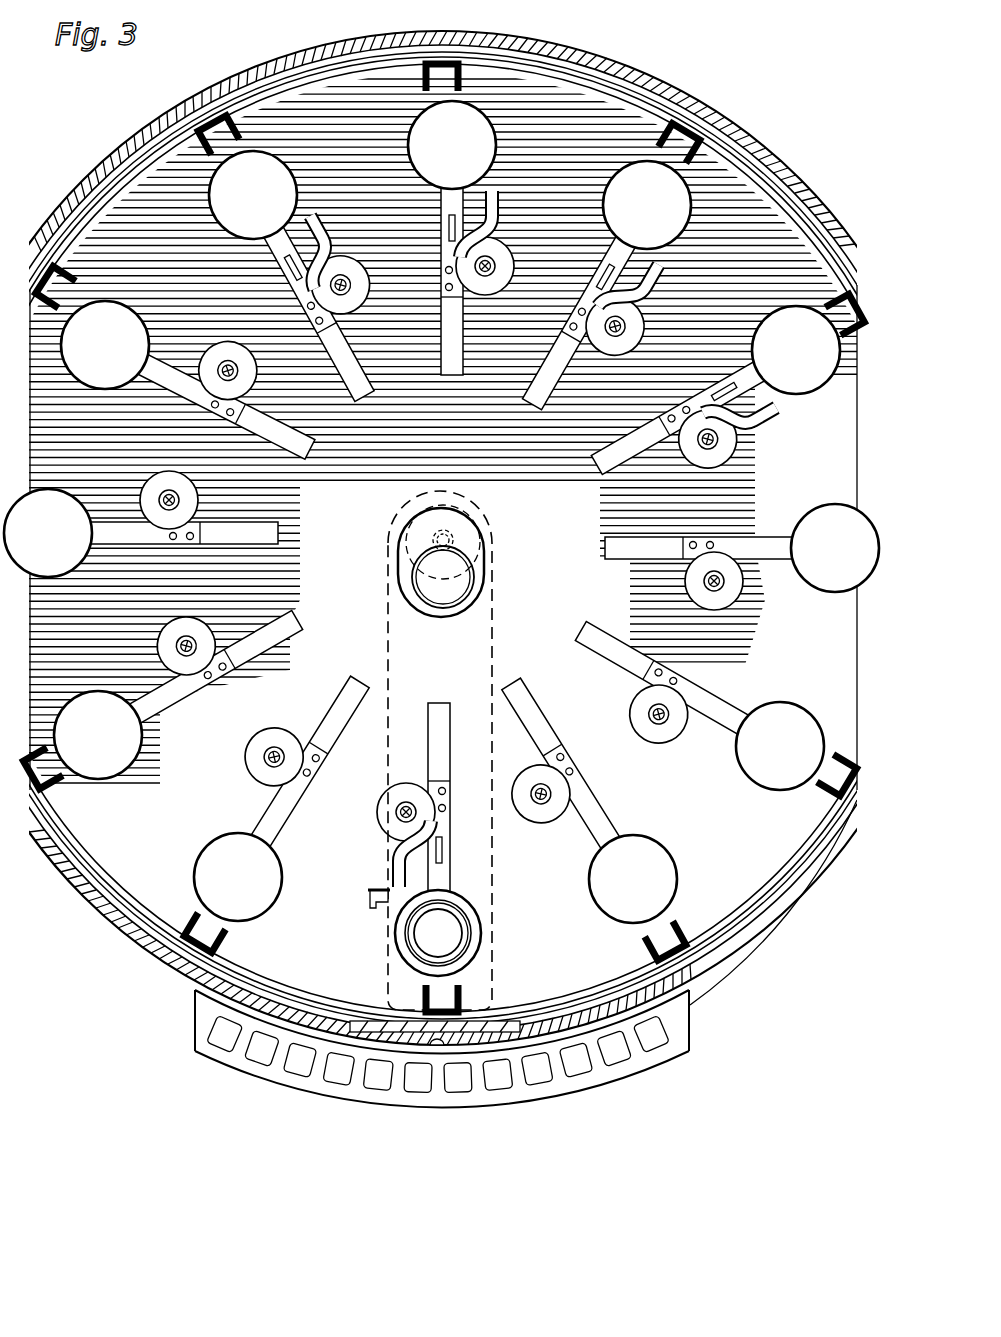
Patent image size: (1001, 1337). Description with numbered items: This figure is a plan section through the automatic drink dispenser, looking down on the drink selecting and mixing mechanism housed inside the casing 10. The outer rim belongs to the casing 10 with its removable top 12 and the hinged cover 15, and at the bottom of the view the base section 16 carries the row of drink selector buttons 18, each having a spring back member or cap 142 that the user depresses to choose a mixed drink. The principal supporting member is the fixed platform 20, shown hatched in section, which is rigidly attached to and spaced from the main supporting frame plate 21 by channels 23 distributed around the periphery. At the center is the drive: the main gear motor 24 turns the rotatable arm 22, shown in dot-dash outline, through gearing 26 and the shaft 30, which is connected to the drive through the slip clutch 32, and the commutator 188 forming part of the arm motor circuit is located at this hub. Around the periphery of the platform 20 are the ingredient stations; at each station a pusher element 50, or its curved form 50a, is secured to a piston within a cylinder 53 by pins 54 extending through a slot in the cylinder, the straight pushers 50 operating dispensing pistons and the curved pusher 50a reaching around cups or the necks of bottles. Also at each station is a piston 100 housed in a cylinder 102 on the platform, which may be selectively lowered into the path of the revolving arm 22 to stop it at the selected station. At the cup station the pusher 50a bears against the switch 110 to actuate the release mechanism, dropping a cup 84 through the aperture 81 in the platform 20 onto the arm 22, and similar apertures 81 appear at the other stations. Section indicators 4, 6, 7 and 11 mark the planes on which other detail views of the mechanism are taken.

The section line 4- 4 is at (500, 445).
The section line 6- 6 is at (401, 765).
The section line 7- 7 is at (290, 808).
The casing 10 is at (168, 728).
The section line 11- 11 is at (626, 790).
The removable top 12 is at (96, 172).
The hinged cover 15 is at (382, 1020).
The base section 16 is at (775, 196).
The drink selector buttons 18 is at (262, 1078).
The fixed platform 20 is at (585, 115).
The main supporting frame plate 21 is at (735, 165).
The rotatable arm 22 is at (388, 640).
The channels 23 is at (208, 130).
The main gear motor 24 is at (462, 581).
The gearing 26 is at (467, 523).
The shaft 30 is at (408, 512).
The slip clutch 32 is at (436, 505).
The pusher element 50 is at (166, 392).
The curved pusher element 50a is at (497, 200).
The cylinder 53 is at (442, 202).
The pins 54 is at (442, 276).
The aperture 81 is at (412, 140).
The cup 84 is at (396, 938).
The piston 100 is at (488, 262).
The cylinder 102 is at (222, 360).
The switch 110 is at (368, 902).
The spring back member 142 is at (332, 1082).
The commutator 188 is at (432, 537).